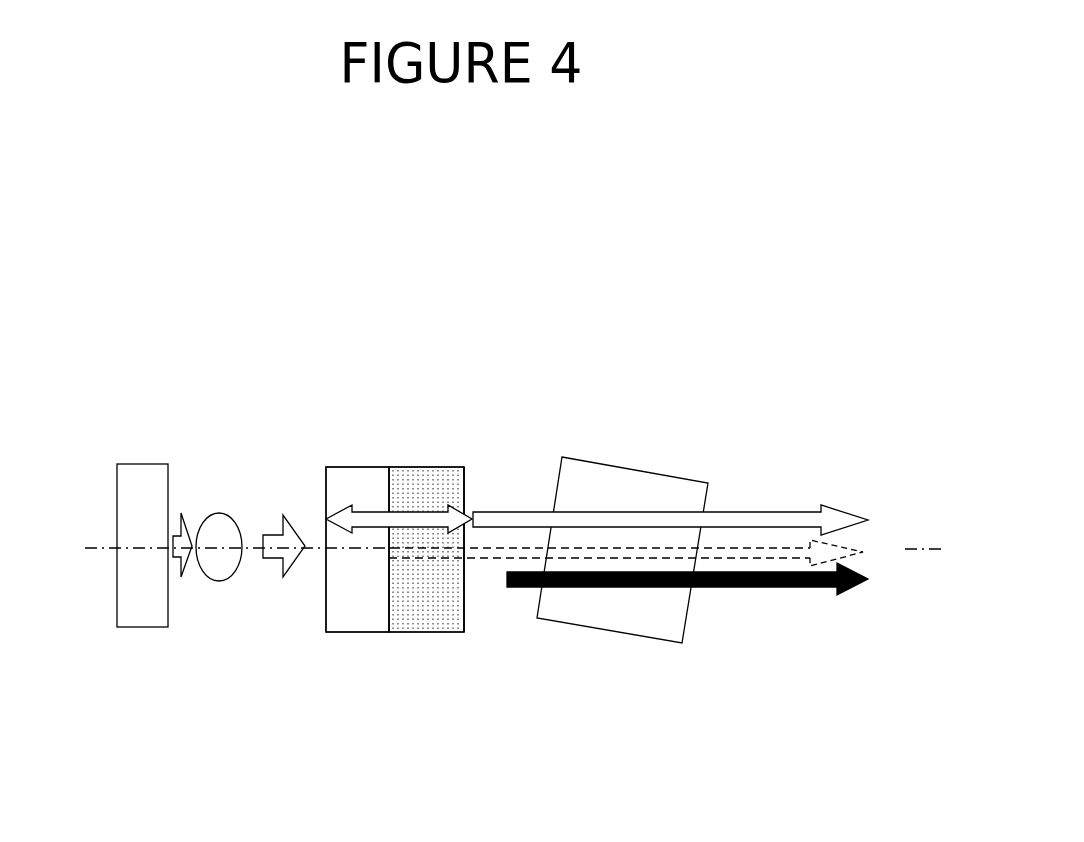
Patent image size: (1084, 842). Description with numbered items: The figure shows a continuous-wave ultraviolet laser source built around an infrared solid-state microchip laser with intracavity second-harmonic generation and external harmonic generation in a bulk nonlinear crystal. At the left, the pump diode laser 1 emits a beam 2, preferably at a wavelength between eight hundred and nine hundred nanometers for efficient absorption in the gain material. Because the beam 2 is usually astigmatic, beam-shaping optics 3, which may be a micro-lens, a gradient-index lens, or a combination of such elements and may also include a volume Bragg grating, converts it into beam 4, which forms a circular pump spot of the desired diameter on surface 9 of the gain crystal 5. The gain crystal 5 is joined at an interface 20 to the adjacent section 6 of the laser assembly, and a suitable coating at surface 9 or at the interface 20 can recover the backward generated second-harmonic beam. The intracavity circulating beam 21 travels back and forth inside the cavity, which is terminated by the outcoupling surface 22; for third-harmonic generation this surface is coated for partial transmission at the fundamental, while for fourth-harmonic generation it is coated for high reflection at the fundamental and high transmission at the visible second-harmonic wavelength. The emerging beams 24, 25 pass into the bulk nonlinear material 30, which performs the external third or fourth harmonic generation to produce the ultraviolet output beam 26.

The pump diode laser 1 is at (142, 477).
The beam 2 is at (182, 507).
The beam-shaping optics 3 is at (221, 490).
The beam 4 is at (287, 500).
The gain crystal 5 is at (370, 490).
The second section of polarizer 6 is at (443, 490).
The surface 9 is at (323, 607).
The interface 20 is at (383, 607).
The bidirectional light path 21 is at (420, 523).
The outcoupling surface 22 is at (473, 605).
The first polarized output beam 24 is at (678, 508).
The optical axis / second beam path 25 is at (647, 549).
The second polarized output beam 26 is at (695, 592).
The bulk nonlinear material 30 is at (590, 492).